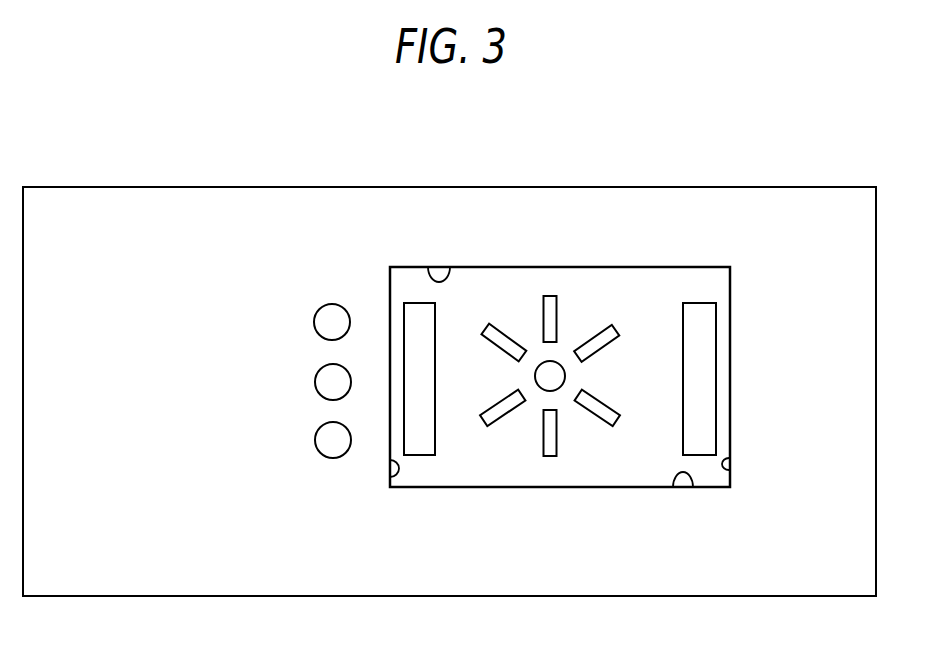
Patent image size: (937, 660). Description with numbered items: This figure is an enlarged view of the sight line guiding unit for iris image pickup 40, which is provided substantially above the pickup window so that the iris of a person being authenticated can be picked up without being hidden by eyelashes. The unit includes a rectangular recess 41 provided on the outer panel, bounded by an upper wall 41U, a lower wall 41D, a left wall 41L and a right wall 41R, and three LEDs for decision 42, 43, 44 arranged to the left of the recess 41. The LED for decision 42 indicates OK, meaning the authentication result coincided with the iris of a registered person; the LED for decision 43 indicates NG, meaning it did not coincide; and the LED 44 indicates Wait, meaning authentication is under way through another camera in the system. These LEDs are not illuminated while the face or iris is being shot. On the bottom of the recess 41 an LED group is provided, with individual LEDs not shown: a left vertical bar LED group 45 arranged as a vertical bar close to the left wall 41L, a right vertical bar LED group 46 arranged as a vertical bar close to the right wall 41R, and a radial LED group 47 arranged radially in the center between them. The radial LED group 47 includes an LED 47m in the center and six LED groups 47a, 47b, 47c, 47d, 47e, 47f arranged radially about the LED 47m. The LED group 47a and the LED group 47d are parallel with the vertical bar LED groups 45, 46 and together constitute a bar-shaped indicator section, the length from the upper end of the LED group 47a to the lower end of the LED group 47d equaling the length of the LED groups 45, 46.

The sight line guiding unit for iris image pickup 40 is at (338, 222).
The rectangular recess 41 is at (480, 287).
The upper wall of the recess 41U is at (433, 270).
The lower wall of the recess 41D is at (690, 477).
The left wall of the recess 41L is at (391, 479).
The right wall of the recess 41R is at (728, 468).
The LED for decision 42 is at (329, 308).
The LED for decision 43 is at (323, 373).
The LED for decision 44 is at (328, 455).
The left vertical bar LED group 45 is at (433, 442).
The right vertical bar LED group 46 is at (700, 361).
The radial LED group 47 is at (558, 392).
The LED group 47a is at (557, 297).
The LED group 47b is at (619, 326).
The LED group 47c is at (597, 404).
The LED group 47d is at (548, 455).
The LED group 47e is at (489, 420).
The LED group 47f is at (516, 337).
The LED 47m is at (536, 372).